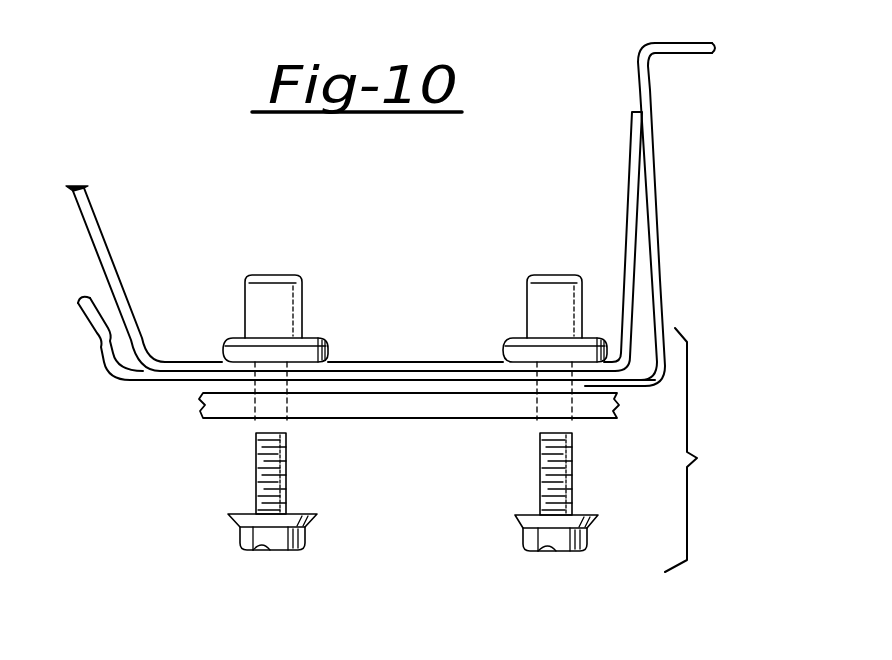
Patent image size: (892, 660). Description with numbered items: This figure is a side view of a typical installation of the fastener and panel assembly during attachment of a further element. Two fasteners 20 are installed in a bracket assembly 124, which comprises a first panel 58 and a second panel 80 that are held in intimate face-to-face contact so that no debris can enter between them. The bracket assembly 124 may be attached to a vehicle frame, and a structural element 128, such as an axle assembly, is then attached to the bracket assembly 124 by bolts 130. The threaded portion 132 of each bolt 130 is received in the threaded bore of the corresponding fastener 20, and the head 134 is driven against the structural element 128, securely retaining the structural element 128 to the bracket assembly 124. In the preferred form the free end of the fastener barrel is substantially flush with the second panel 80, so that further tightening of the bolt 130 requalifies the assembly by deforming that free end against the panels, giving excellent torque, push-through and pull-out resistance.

The fastener 20 is at (333, 303).
The panel 58 is at (135, 312).
The second panel 80 is at (117, 377).
The bracket assembly 124 is at (700, 222).
The structural element 128 is at (408, 414).
The bolt 130 is at (215, 543).
The threaded portion 132 is at (257, 477).
The head 134 is at (305, 543).